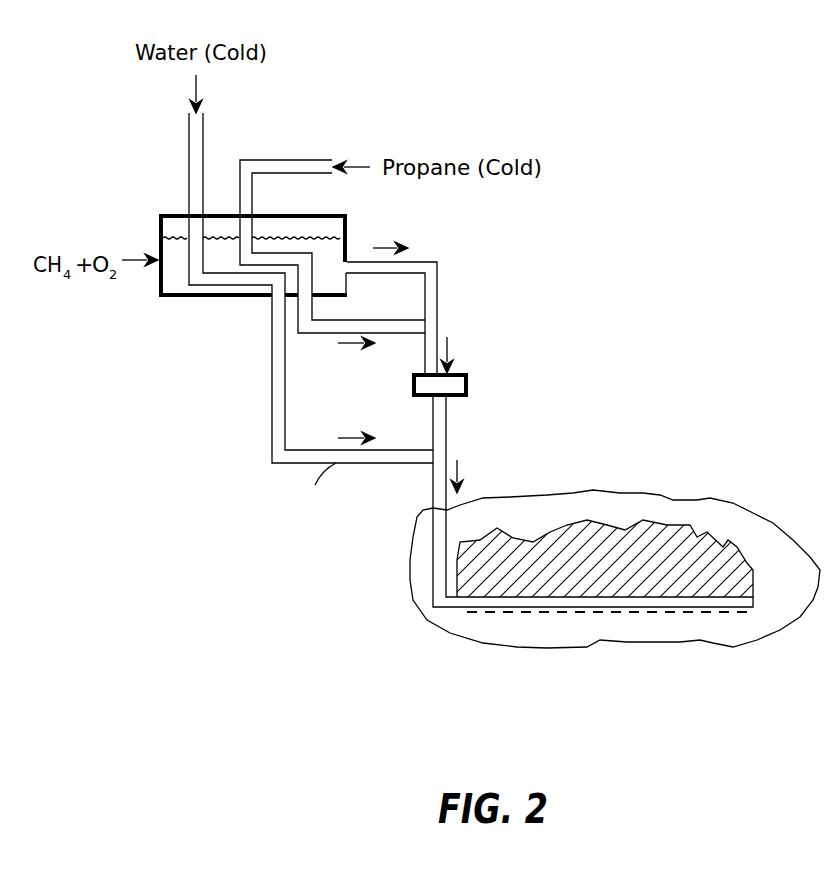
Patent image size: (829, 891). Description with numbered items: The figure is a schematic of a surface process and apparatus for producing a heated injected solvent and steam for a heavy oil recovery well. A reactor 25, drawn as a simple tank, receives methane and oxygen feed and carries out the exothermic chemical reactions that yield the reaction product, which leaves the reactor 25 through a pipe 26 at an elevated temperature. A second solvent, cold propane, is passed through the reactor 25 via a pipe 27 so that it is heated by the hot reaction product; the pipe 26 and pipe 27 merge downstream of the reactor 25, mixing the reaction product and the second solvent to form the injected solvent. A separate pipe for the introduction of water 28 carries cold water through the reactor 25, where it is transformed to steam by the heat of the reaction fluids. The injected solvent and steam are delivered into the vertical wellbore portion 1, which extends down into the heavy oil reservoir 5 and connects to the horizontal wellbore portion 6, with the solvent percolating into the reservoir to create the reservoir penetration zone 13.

The vertical wellbore portion 1 is at (433, 477).
The heavy oil reservoir 5 is at (733, 503).
The horizontal wellbore portion 6 is at (680, 612).
The reservoir penetration zone 13 is at (632, 532).
The reactor 25 is at (160, 213).
The pipe 26 is at (422, 260).
The pipe 27 is at (273, 158).
The pipe for the introduction of water 28 is at (188, 125).